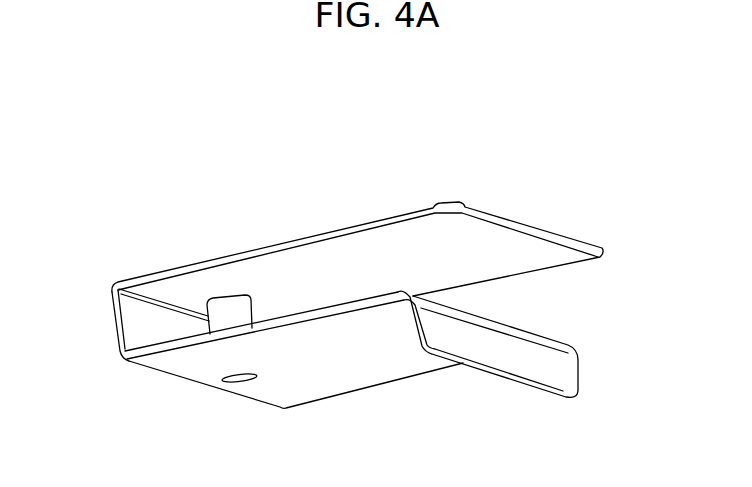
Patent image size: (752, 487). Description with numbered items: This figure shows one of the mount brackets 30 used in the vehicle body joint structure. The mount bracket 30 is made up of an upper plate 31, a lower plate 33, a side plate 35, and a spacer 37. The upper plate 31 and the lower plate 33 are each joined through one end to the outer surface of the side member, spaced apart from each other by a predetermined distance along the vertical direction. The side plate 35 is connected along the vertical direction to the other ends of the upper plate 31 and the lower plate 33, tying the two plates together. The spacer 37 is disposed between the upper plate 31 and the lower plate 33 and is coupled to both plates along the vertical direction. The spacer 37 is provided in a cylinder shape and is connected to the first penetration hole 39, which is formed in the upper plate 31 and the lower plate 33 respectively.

The mount bracket 30 is at (385, 162).
The upper plate 31 is at (295, 260).
The lower plate 33 is at (332, 379).
The side plate 35 is at (128, 322).
The spacer 37 is at (226, 305).
The first penetration hole 39 is at (240, 386).